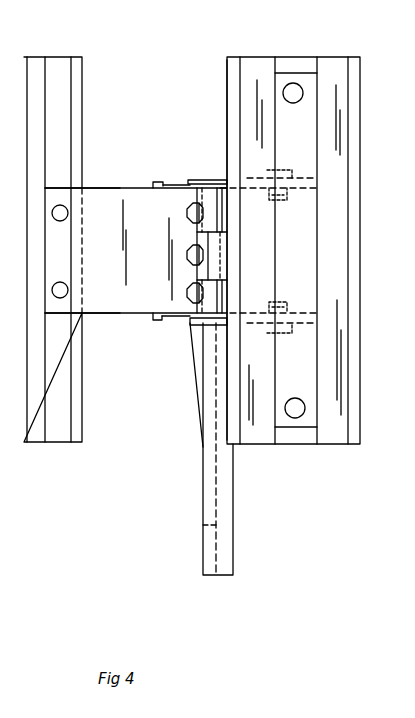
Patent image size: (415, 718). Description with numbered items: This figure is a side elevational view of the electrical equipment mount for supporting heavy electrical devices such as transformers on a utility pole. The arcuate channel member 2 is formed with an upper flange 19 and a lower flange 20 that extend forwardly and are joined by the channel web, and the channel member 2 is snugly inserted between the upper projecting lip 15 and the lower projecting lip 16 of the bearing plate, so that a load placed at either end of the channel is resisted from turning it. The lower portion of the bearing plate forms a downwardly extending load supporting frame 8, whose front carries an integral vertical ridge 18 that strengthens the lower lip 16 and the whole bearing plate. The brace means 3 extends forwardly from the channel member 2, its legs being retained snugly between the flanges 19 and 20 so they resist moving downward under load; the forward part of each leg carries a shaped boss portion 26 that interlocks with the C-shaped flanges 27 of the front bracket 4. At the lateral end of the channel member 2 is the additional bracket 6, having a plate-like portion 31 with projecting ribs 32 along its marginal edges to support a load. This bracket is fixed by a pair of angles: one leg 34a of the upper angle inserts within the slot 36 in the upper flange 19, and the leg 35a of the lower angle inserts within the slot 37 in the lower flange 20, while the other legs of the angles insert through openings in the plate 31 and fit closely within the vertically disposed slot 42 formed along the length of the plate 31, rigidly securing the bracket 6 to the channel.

The channel member 2 is at (153, 185).
The brace means 3 is at (118, 322).
The front bracket or mounting pad 4 is at (26, 57).
The additional bracket or mounting pad 6 is at (358, 57).
The load supporting frame 8 is at (233, 488).
The upper projecting lip 15 is at (213, 180).
The lower projecting lip 16 is at (188, 325).
The vertical ridge 18 is at (197, 380).
The upper flange 19 is at (170, 164).
The lower flange 20 is at (156, 321).
The shaped boss portion 26 is at (62, 186).
The C-shaped flanges 27 is at (66, 86).
The plate-like portion 31 is at (253, 66).
The projecting ribs 32 is at (233, 110).
The leg of upper angle 34a is at (253, 182).
The leg of lower angle 35a is at (257, 324).
The slot in upper channel flange 36 is at (176, 187).
The slot in lower channel flange 37 is at (174, 321).
The vertically disposed slot 42 is at (293, 58).